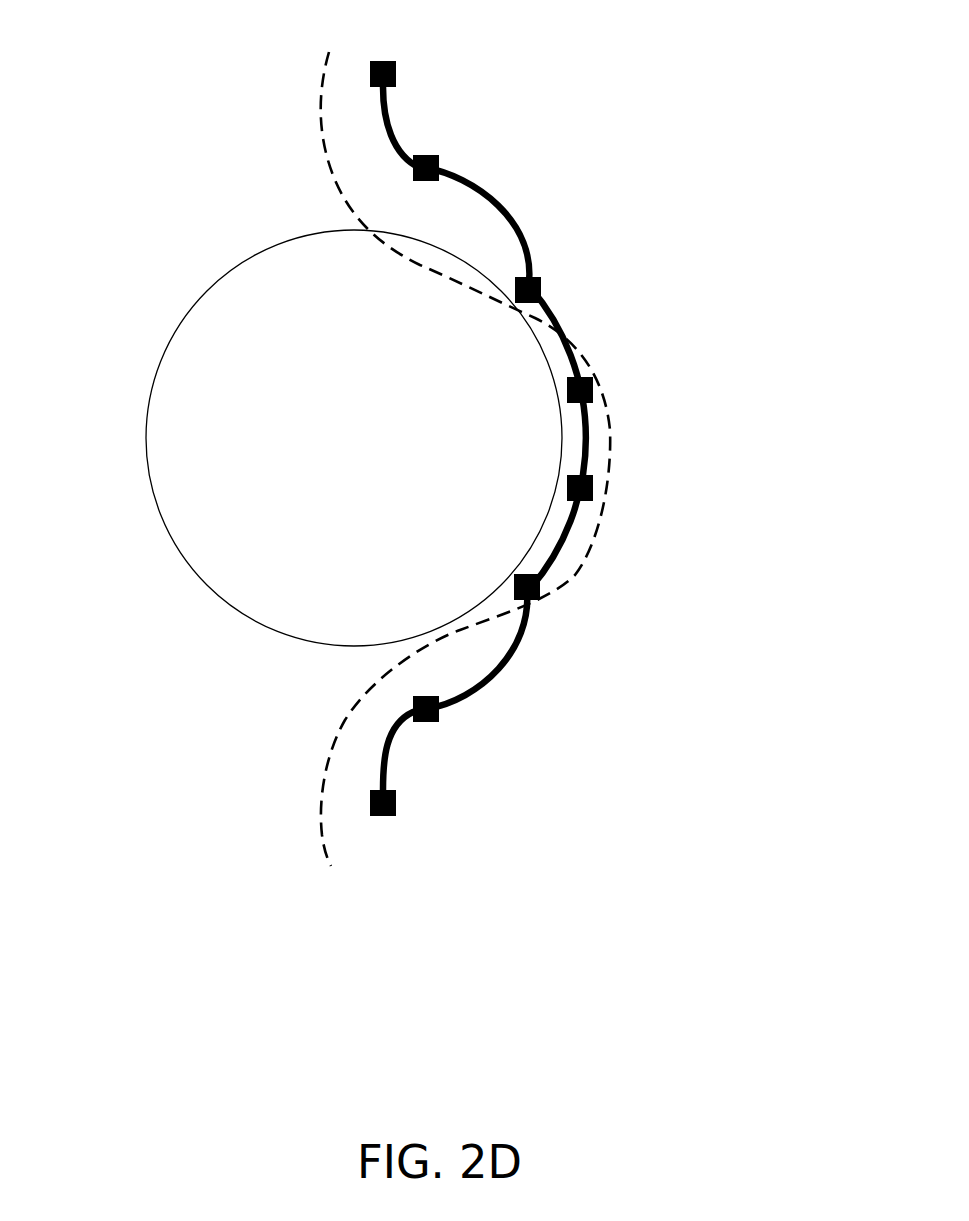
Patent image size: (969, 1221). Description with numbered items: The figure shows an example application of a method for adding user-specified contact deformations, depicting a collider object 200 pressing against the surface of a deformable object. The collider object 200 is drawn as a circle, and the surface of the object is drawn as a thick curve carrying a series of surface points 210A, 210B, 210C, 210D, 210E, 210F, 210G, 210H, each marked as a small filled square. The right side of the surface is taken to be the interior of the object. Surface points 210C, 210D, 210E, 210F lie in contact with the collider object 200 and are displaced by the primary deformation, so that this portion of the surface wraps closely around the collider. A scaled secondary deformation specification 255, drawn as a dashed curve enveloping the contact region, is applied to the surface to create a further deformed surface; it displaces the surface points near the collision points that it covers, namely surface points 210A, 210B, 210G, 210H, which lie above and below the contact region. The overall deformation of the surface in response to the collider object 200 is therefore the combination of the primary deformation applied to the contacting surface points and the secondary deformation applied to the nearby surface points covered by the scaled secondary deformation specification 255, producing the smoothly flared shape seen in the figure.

The collider object 200 is at (224, 450).
The surface point 210A is at (397, 63).
The surface point 210B is at (439, 163).
The surface point 210C is at (541, 295).
The surface point 210D is at (593, 392).
The surface point 210E is at (593, 492).
The surface point 210F is at (540, 597).
The surface point 210G is at (439, 713).
The surface point 210H is at (397, 807).
The scaled secondary deformation specification 255 is at (313, 808).